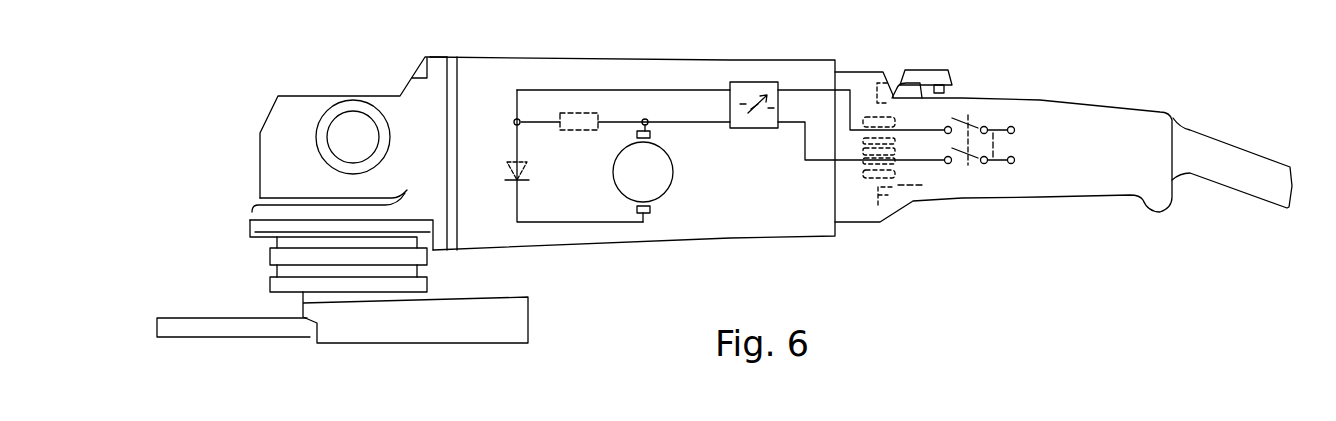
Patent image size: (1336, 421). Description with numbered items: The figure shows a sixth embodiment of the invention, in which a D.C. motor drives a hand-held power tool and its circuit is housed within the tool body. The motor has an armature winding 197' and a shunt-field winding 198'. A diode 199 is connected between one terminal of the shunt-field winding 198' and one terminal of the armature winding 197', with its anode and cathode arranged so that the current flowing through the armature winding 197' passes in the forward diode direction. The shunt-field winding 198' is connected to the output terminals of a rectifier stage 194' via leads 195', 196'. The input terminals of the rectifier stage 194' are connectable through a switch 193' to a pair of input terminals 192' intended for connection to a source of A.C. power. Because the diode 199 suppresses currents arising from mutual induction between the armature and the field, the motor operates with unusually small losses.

The input terminals 192' is at (998, 182).
The switch 193' is at (964, 176).
The rectifier stage 194' is at (837, 123).
The lead 195' is at (623, 126).
The lead 196' is at (622, 136).
The armature winding 197' is at (667, 173).
The shunt-field winding 198' is at (575, 137).
The diode 199 is at (527, 166).